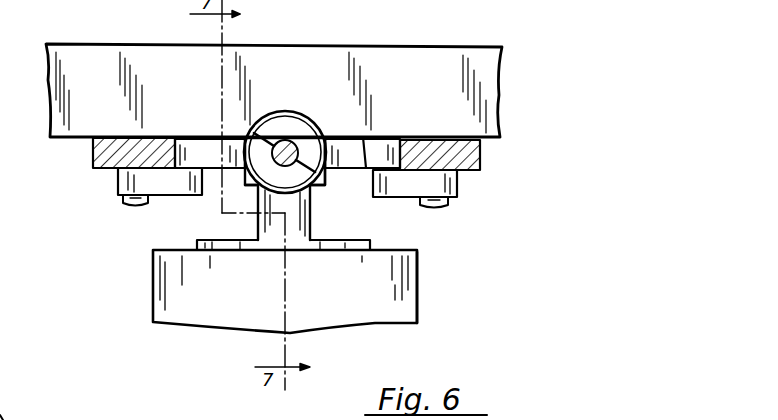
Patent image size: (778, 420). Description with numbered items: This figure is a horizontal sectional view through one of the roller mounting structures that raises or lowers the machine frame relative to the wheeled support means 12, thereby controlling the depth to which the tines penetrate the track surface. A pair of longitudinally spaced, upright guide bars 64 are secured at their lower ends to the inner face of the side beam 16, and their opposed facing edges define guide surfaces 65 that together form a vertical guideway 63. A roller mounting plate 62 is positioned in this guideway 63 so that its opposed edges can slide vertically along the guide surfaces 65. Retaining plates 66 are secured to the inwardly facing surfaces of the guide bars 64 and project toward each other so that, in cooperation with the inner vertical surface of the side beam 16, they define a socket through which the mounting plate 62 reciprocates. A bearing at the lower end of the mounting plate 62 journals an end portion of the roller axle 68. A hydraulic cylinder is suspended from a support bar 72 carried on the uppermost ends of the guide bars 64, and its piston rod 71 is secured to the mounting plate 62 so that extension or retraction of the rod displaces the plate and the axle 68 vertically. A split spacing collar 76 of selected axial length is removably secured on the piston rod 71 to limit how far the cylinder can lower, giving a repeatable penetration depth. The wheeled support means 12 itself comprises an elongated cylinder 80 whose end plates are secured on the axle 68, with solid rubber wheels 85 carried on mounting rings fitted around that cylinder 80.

The wheeled support means 12 is at (143, 262).
The side beam 16 is at (457, 58).
The roller mounting plate 62 is at (205, 147).
The guideway 63 is at (363, 135).
The guide bar 64 is at (93, 158).
The guide surface 65 is at (381, 138).
The retaining plate 66 is at (132, 184).
The roller axle 68 is at (300, 222).
The piston rod 71 is at (290, 141).
The support bar 72 is at (0, 415).
The spacing collar 76 is at (303, 124).
The elongated cylinder 80 is at (372, 243).
The rubber wheel 85 is at (405, 278).